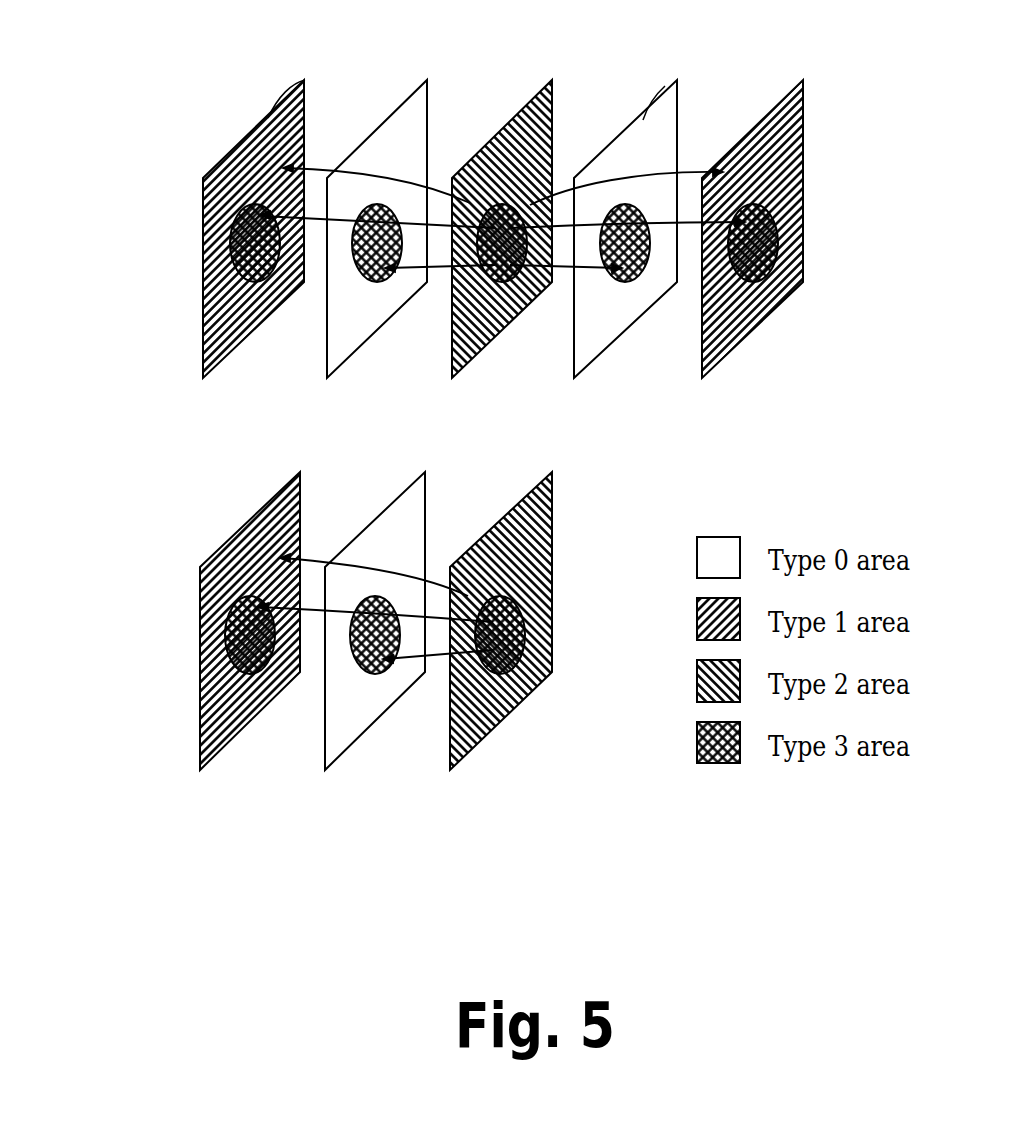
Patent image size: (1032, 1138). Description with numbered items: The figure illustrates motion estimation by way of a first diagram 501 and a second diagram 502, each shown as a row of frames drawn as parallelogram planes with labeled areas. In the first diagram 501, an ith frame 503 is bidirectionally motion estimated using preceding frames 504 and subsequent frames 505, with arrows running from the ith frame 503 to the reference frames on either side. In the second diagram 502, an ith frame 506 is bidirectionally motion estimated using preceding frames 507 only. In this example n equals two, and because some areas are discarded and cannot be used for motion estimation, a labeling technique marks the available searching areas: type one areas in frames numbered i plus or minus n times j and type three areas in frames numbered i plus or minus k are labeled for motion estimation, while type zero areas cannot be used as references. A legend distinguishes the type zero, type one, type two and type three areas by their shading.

The first diagram 501 is at (420, 230).
The second diagram 502 is at (314, 673).
The ith frame 503 is at (535, 100).
The preceding frames 504 is at (422, 98).
The subsequent frames 505 is at (800, 92).
The ith frame 506 is at (498, 722).
The preceding frames 507 is at (267, 703).